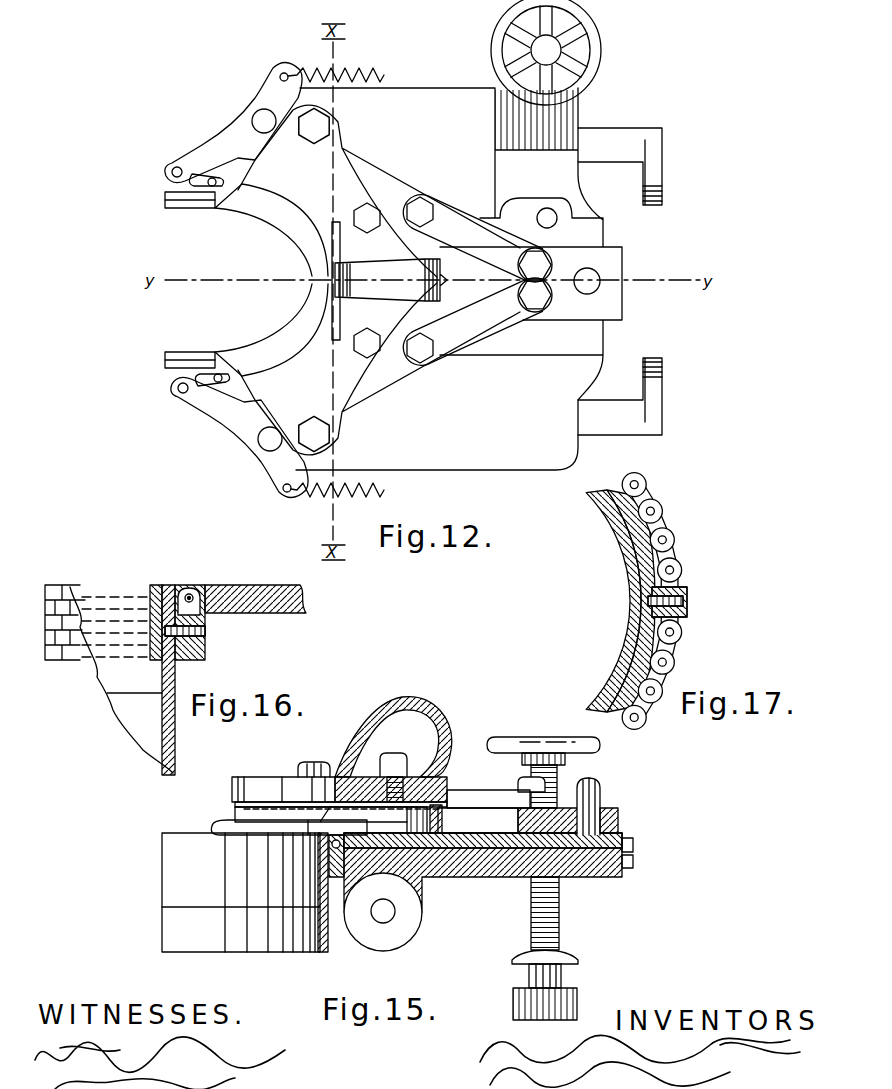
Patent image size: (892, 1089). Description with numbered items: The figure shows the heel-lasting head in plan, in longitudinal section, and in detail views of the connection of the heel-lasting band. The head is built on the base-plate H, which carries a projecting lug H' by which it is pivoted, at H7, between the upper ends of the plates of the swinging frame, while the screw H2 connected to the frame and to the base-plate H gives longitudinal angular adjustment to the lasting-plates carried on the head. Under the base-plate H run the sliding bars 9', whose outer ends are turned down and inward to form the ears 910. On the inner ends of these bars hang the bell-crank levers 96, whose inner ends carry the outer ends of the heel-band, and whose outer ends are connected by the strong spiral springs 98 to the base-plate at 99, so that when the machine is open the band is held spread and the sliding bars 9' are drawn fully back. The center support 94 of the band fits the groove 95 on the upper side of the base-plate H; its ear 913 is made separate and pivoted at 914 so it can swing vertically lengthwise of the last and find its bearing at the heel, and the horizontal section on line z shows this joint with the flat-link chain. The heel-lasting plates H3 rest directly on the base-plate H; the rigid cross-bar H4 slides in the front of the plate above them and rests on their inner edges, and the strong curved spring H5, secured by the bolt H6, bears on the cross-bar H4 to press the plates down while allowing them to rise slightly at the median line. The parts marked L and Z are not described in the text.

In FIG. 12, the base-plate of the heel-lasting head H is at (459, 279).
In FIG. 15, the base-plate of the heel-lasting head H is at (488, 872).
In FIG. 15, the projecting lug H' is at (383, 941).
In FIG. 12, the screw H2 is at (553, 52).
In FIG. 15, the screw H2 is at (543, 878).
In FIG. 12, the heel-lasting plates H3 is at (290, 259).
In FIG. 15, the heel-lasting plates H3 is at (225, 816).
In FIG. 15, the cross-bar H4 is at (336, 777).
In FIG. 15, the curved spring H5 is at (426, 693).
In FIG. 15, the bolt H6 is at (412, 751).
In FIG. 15, the pivot of the heel-lasting head H7 is at (395, 911).
In FIG. 12, the sliding bars 9' is at (620, 281).
In FIG. 12, the ears 910 is at (666, 282).
In FIG. 16, the ear of the center support 913 is at (194, 633).
In FIG. 17, the ear of the center support 913 is at (687, 614).
In FIG. 15, the ear of the center support 913 is at (338, 865).
In FIG. 16, the pivot of the ear 914 is at (196, 592).
In FIG. 17, the pivot of the ear 914 is at (683, 601).
In FIG. 15, the pivot of the ear 914 is at (318, 843).
In FIG. 16, the center support of the heel-band 94 is at (270, 599).
In FIG. 15, the center support of the heel-band 94 is at (368, 820).
In FIG. 15, the groove 95 is at (470, 827).
In FIG. 12, the bell-crank levers 96 is at (236, 279).
In FIG. 12, the spiral springs 98 is at (336, 280).
In FIG. 12, the spring attachment point on base-plate 99 is at (285, 283).
In FIG. 16, the guide rail L is at (109, 679).
In FIG. 15, the guide rail L is at (256, 899).
In FIG. 16, the tank Z is at (148, 631).
In FIG. 16, the section line z z is at (205, 631).